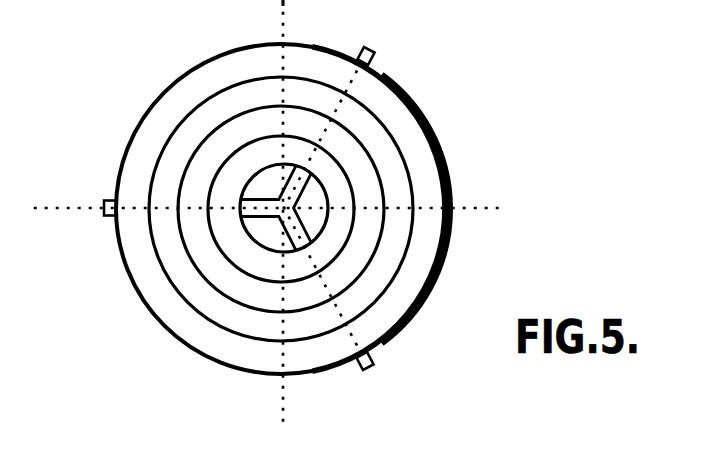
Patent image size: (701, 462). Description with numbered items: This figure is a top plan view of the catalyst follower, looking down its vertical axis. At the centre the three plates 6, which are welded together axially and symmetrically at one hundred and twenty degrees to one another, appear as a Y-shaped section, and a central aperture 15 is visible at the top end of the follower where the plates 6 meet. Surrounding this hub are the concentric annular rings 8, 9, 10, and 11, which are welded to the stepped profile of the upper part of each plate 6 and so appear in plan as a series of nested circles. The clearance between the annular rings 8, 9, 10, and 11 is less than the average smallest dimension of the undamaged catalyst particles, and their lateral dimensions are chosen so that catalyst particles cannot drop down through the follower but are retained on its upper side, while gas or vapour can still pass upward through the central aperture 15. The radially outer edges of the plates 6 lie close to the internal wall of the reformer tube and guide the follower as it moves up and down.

The plate 6 is at (108, 198).
The annular ring 8 is at (410, 265).
The annular ring 9 is at (398, 225).
The annular ring 10 is at (367, 182).
The annular ring 11 is at (329, 182).
The central aperture 15 is at (262, 185).